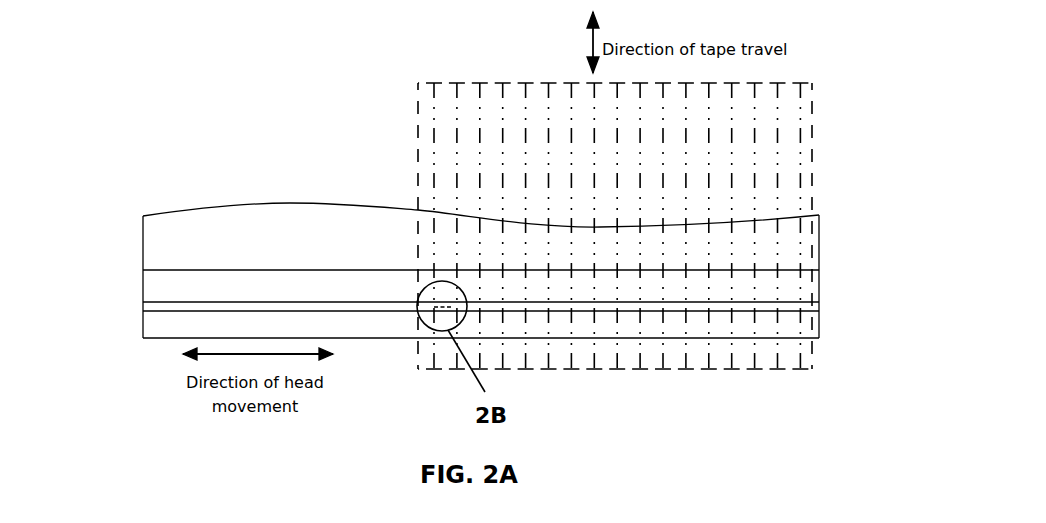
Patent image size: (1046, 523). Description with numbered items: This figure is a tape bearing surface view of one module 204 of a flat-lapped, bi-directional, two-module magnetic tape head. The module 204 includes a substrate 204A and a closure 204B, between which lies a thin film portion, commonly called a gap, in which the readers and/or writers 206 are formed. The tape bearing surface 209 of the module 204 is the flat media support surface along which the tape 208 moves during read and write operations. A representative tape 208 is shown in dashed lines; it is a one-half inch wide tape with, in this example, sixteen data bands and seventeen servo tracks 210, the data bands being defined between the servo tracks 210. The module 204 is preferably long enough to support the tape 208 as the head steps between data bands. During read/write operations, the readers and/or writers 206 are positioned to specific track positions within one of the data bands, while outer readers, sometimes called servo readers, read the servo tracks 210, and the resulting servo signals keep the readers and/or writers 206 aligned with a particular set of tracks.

The module 204 is at (436, 233).
The substrate 204A is at (272, 203).
The closure 204B is at (143, 327).
The readers and/or writers 206 is at (410, 303).
The tape 208 is at (418, 88).
The tape bearing surface 209 is at (328, 290).
The servo tracks 210 is at (523, 163).